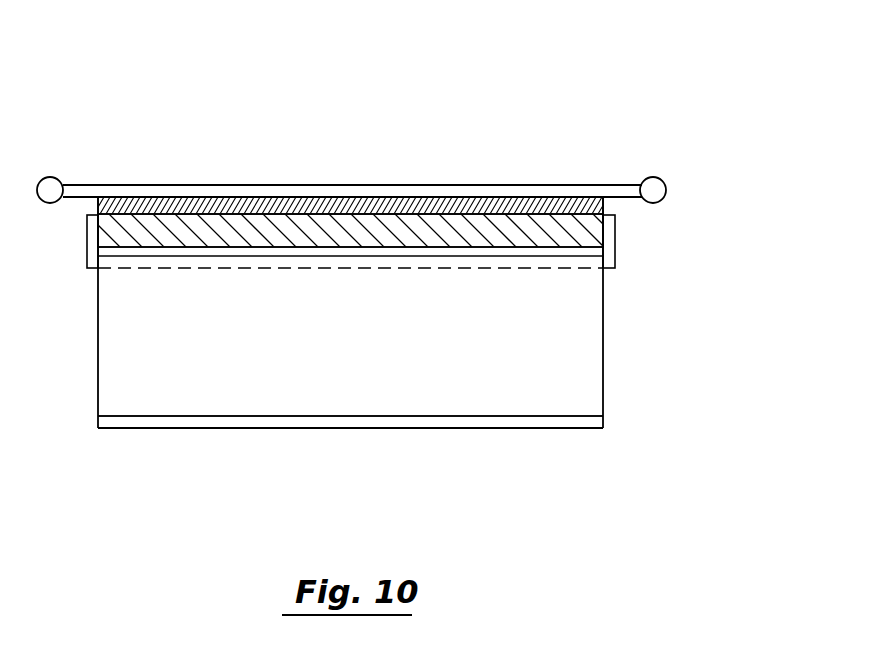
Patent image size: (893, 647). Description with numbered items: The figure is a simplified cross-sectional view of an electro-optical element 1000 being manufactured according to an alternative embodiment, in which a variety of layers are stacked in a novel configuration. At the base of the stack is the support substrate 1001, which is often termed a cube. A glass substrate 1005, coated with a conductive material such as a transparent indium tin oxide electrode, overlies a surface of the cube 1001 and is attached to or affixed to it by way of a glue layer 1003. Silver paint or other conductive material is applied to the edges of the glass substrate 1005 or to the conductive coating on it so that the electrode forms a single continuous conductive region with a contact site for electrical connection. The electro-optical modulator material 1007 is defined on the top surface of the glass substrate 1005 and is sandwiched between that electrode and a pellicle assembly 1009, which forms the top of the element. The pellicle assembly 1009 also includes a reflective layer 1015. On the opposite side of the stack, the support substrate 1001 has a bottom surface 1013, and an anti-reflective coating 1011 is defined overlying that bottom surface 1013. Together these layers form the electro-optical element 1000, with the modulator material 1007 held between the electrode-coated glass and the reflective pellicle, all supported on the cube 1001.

The electro-optical element 1000 is at (555, 108).
The support substrate 1001 is at (552, 352).
The glue layer 1003 is at (300, 253).
The glass substrate 1005 is at (433, 230).
The electro-optical modulator material 1007 is at (280, 205).
The pellicle assembly 1009 is at (420, 188).
The anti-reflective coating 1011 is at (450, 420).
The bottom surface 1013 is at (240, 417).
The reflective layer 1015 is at (625, 198).